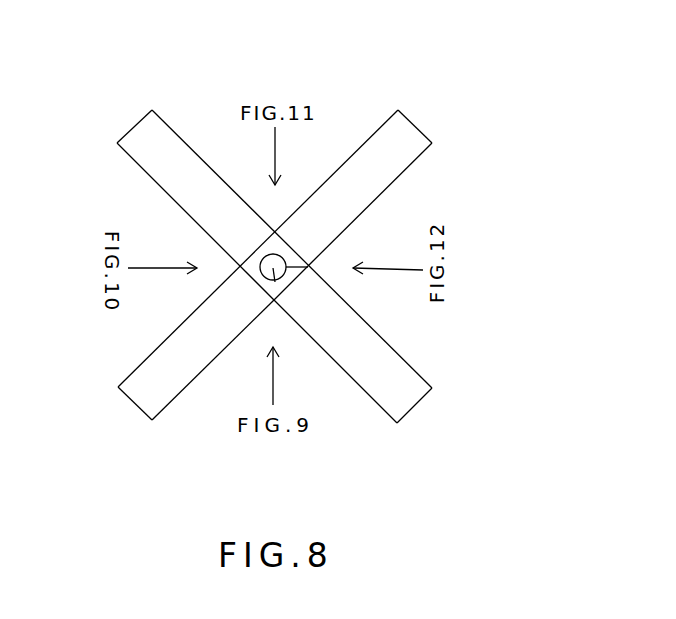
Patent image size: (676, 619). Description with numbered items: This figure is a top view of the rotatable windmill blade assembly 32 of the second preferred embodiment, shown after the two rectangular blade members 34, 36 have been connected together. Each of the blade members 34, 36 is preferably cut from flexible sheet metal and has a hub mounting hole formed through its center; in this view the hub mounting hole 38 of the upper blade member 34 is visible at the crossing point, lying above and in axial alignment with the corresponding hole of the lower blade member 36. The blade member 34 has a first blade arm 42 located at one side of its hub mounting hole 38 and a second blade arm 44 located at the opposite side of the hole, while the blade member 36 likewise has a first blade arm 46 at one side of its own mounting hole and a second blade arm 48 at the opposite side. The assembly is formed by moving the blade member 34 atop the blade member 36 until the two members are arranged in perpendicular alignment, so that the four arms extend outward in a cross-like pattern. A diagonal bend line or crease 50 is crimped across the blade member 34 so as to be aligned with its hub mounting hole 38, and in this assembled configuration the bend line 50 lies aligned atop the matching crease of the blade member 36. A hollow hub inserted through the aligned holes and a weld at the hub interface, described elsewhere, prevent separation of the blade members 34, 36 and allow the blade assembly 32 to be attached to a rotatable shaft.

The rotatable windmill blade assembly 32 is at (304, 183).
The rectangular blade member 34 is at (387, 191).
The rectangular blade member 36 is at (399, 351).
The hub mounting hole 38 is at (272, 282).
The first blade arm 42 is at (403, 154).
The second blade arm 44 is at (172, 357).
The first blade arm 46 is at (187, 168).
The second blade arm 48 is at (372, 377).
The diagonal bend line 50 is at (293, 268).